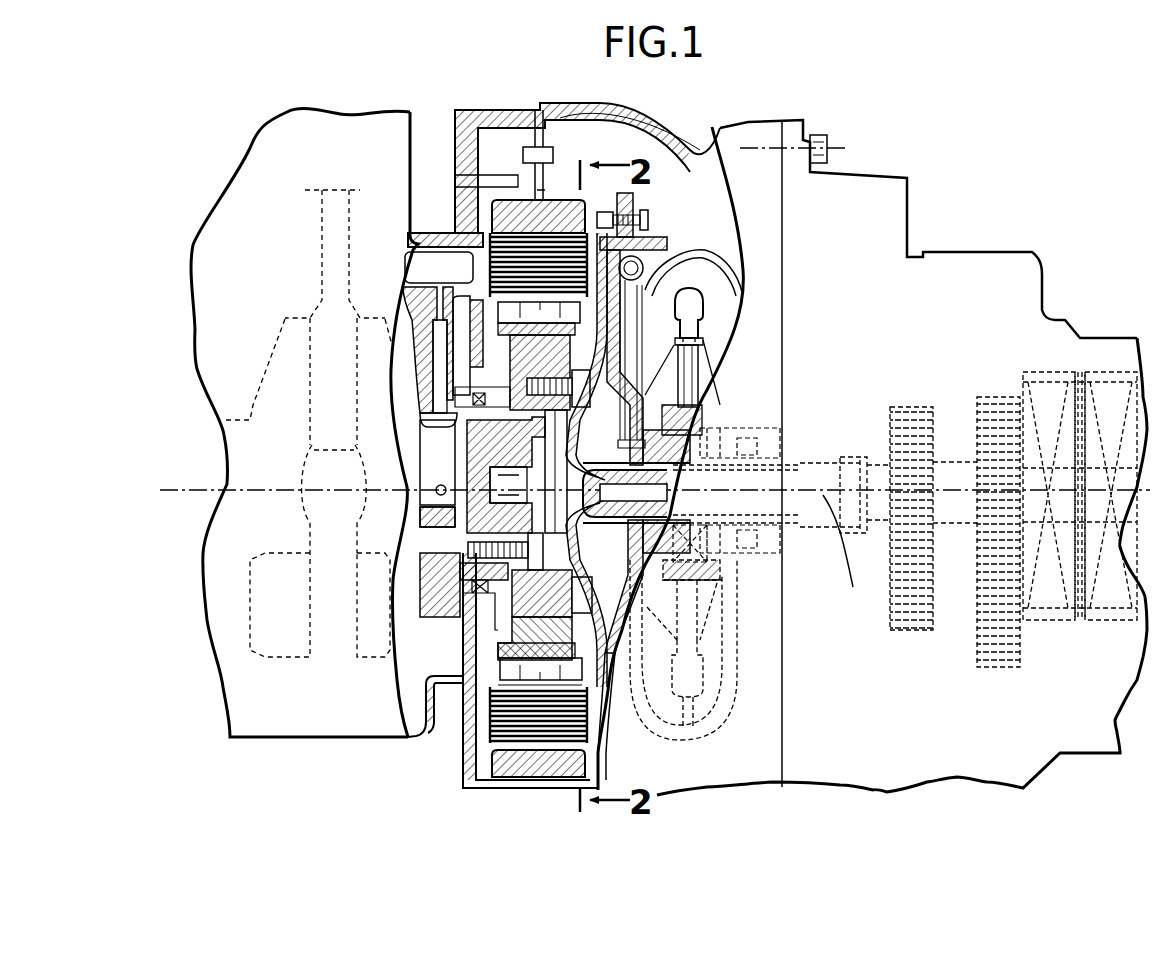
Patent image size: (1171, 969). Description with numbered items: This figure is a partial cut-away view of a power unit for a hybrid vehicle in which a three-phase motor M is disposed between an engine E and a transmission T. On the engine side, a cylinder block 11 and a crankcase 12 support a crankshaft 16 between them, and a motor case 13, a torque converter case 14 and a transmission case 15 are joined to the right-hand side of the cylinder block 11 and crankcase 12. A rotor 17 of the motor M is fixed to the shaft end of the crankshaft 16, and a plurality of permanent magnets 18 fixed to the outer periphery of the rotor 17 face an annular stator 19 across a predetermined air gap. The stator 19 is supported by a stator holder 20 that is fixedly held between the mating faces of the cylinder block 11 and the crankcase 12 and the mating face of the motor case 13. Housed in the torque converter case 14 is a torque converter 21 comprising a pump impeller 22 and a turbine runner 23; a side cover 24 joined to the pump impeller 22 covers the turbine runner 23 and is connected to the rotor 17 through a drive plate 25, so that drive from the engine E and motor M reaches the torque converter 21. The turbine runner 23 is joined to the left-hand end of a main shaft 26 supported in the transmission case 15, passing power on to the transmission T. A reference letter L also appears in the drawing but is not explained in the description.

The engine E is at (250, 190).
The transmission T is at (985, 238).
The three-phase motor M is at (560, 192).
The lubricant passage L is at (841, 554).
The cylinder block 11 is at (418, 233).
The crankcase 12 is at (448, 700).
The motor case 13 is at (580, 117).
The torque converter case 14 is at (690, 146).
The transmission case 15 is at (873, 182).
The crankshaft 16 is at (272, 355).
The rotor 17 is at (503, 373).
The permanent magnets 18 is at (500, 674).
The annular stator 19 is at (487, 254).
The stator holder 20 is at (537, 190).
The torque converter 21 is at (718, 240).
The pump impeller 22 is at (718, 320).
The turbine runner 23 is at (673, 280).
The side cover 24 is at (647, 247).
The drive plate 25 is at (592, 460).
The main shaft 26 is at (822, 462).